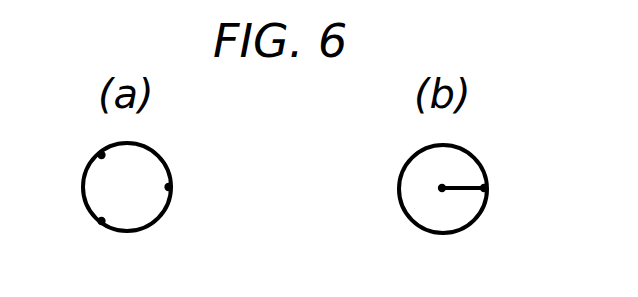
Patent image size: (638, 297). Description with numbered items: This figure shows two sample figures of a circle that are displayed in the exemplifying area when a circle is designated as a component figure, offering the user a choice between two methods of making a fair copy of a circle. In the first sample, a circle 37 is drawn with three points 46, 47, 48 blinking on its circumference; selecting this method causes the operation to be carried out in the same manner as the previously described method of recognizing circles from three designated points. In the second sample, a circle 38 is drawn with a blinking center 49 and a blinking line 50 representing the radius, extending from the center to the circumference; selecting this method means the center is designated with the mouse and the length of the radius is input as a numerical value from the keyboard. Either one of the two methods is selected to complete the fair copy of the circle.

The circle 37 is at (160, 156).
The point 46 is at (172, 187).
The point 47 is at (99, 223).
The point 48 is at (99, 153).
The circle 38 is at (408, 163).
The center 49 is at (442, 188).
The line representing the radius 50 is at (463, 188).